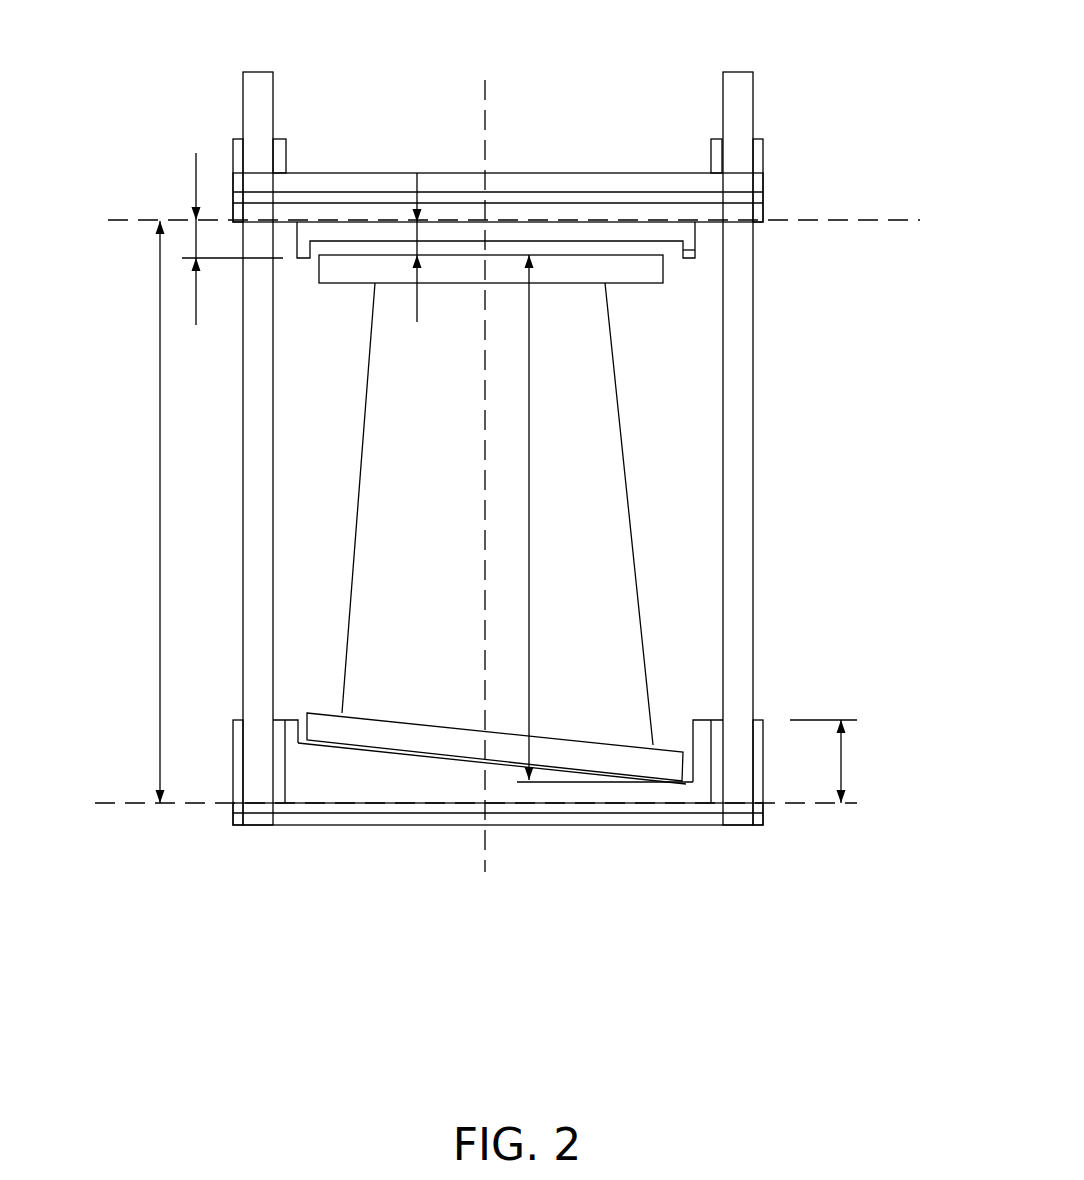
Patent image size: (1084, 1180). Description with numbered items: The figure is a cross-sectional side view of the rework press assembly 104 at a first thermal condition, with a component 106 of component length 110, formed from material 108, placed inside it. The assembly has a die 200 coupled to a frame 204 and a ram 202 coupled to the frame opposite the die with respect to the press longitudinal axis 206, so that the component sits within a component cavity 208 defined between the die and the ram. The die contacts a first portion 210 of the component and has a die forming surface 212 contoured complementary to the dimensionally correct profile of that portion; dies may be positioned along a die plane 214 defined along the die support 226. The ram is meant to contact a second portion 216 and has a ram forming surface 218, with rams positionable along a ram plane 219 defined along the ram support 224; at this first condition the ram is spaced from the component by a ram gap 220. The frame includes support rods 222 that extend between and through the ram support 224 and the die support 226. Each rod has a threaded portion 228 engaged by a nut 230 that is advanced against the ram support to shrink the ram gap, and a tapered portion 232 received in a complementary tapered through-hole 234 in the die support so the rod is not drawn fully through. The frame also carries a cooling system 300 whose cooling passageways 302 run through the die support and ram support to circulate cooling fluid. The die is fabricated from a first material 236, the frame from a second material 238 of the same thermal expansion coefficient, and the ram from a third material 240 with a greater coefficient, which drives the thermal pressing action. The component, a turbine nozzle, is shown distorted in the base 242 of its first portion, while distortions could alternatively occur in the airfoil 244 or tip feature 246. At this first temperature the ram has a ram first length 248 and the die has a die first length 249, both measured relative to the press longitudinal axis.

The rework press assembly 104 is at (845, 151).
The component 106 is at (357, 550).
The material 108 is at (370, 462).
The component length 110 is at (530, 515).
The die 200 is at (290, 788).
The ram 202 is at (688, 233).
The frame 204 is at (858, 333).
The press longitudinal axis 206 is at (488, 82).
The component cavity 208 is at (675, 397).
The first portion 210 is at (306, 691).
The die forming surface 212 is at (300, 744).
The die plane 214 is at (830, 803).
The second portion 216 is at (670, 305).
The ram forming surface 218 is at (313, 257).
The ram plane 219 is at (137, 220).
The ram gap 220 is at (413, 250).
The support rods 222 is at (255, 88).
The ram support 224 is at (457, 172).
The die support 226 is at (757, 735).
The threaded portion 228 is at (257, 138).
The nuts 230 is at (280, 157).
The tapered portion 232 is at (250, 790).
The tapered through-holes 234 is at (235, 706).
The first material 236 is at (705, 785).
The second material 238 is at (252, 583).
The third material 240 is at (688, 250).
The base 242 is at (400, 730).
The airfoil 244 is at (605, 568).
The tip feature 246 is at (337, 268).
The ram first length 248 is at (197, 238).
The die first length 249 is at (845, 760).
The cooling system 300 is at (196, 147).
The cooling passageways 302 is at (772, 197).